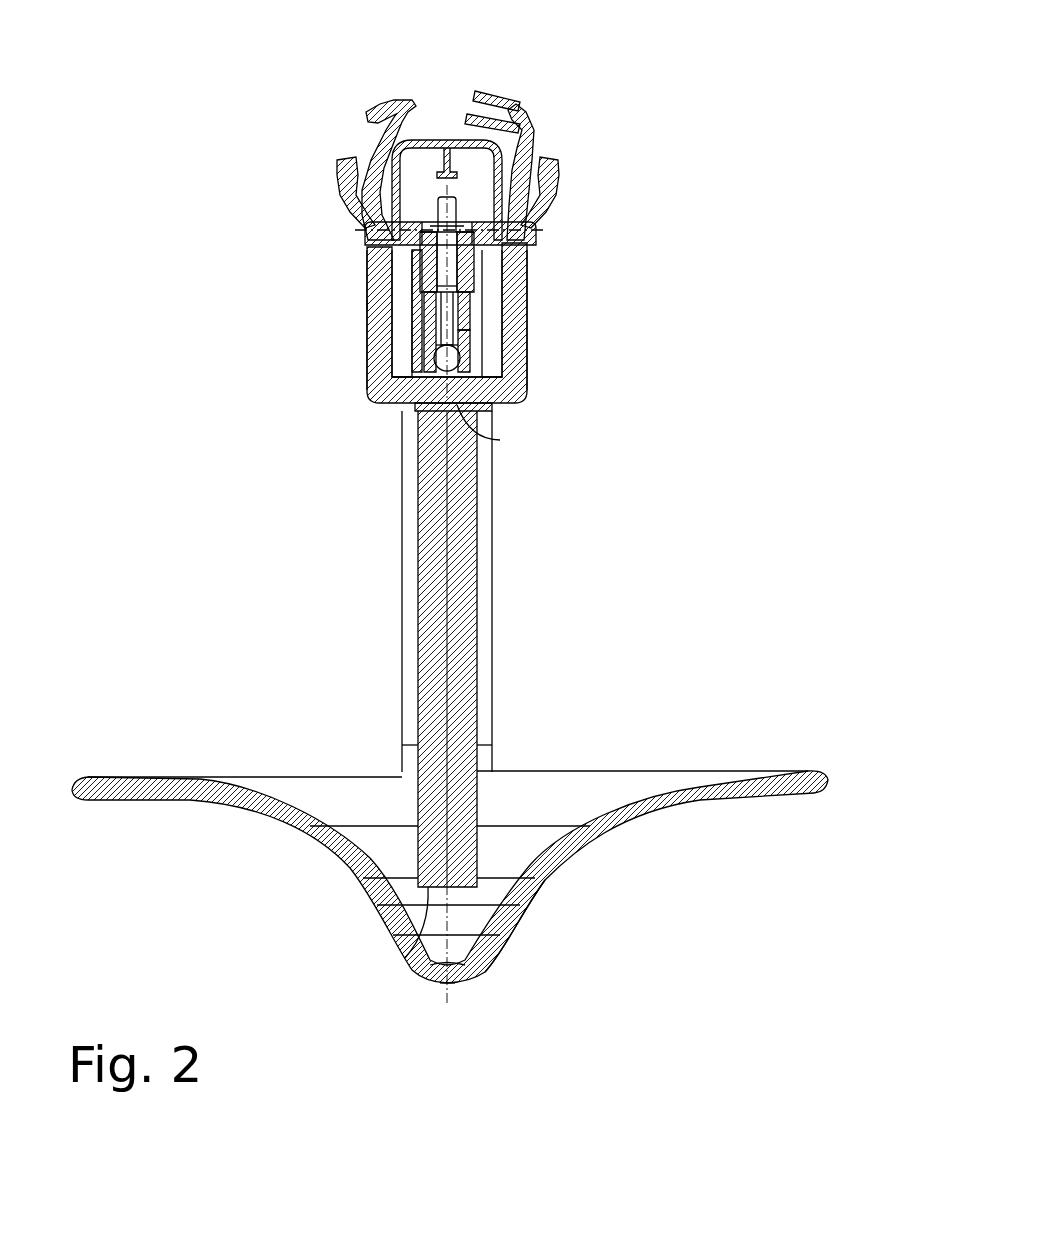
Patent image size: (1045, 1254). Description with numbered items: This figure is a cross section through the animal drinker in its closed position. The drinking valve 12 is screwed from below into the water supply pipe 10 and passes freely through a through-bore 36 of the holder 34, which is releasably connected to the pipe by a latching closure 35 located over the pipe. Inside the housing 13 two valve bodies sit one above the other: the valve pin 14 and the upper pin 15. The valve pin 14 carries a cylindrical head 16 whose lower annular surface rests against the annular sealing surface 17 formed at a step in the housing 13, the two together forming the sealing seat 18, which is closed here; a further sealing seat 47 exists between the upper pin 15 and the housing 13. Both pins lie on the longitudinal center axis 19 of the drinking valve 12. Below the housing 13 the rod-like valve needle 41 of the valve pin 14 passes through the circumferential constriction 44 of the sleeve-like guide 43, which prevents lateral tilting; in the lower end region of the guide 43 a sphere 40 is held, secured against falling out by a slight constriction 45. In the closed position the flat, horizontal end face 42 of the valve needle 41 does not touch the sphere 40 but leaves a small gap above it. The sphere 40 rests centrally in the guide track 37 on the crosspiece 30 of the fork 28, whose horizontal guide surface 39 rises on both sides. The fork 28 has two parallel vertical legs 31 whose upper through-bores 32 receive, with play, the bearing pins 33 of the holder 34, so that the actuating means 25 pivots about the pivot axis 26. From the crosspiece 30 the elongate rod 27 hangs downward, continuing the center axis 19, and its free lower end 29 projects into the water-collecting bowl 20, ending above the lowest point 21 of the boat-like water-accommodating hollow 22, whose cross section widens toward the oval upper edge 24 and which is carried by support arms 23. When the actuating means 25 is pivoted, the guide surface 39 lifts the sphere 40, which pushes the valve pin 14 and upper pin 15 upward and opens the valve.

The water supply pipe 10 is at (433, 140).
The drinking valve 12 is at (407, 321).
The housing 13 is at (421, 253).
The valve pin 14 is at (477, 303).
The upper pin 15 is at (456, 200).
The head 16 is at (468, 252).
The sealing surface 17 is at (552, 291).
The sealing seat 18 is at (478, 290).
The longitudinal center axis 19 is at (452, 993).
The water-collecting bowl 20 is at (680, 826).
The lowest point 21 is at (443, 962).
The water-accommodating hollow 22 is at (552, 860).
The support arm 23 is at (480, 590).
The upper edge 24 is at (678, 765).
The actuating means 25 is at (353, 460).
The pivot axis 26 is at (352, 230).
The rod 27 is at (465, 680).
The fork 28 is at (545, 371).
The free lower end 29 is at (405, 958).
The crosspiece 30 is at (495, 407).
The leg 31 is at (372, 378).
The through-bore 32 is at (470, 228).
The bearing pin 33 is at (368, 240).
The holder 34 is at (524, 152).
The latching closure 35 is at (515, 84).
The through-bore 36 is at (413, 270).
The guide track 37 is at (375, 404).
The guide surface 39 is at (400, 405).
The sphere 40 is at (456, 352).
The valve needle 41 is at (561, 298).
The end face 42 is at (434, 358).
The guide 43 is at (416, 283).
The constriction 44 is at (475, 318).
The constriction 45 is at (463, 375).
The sealing seat 47 is at (450, 214).